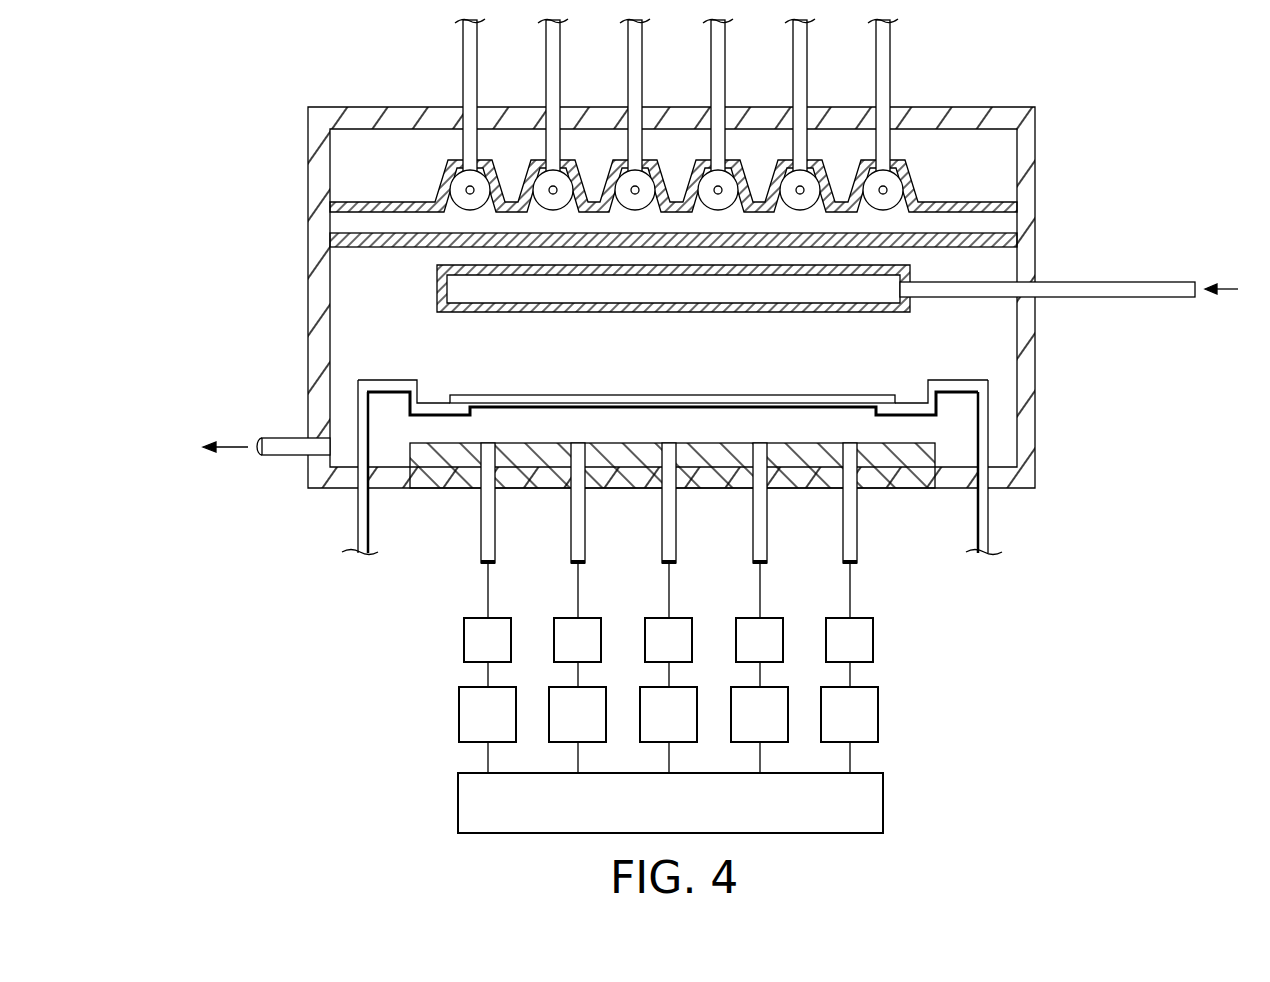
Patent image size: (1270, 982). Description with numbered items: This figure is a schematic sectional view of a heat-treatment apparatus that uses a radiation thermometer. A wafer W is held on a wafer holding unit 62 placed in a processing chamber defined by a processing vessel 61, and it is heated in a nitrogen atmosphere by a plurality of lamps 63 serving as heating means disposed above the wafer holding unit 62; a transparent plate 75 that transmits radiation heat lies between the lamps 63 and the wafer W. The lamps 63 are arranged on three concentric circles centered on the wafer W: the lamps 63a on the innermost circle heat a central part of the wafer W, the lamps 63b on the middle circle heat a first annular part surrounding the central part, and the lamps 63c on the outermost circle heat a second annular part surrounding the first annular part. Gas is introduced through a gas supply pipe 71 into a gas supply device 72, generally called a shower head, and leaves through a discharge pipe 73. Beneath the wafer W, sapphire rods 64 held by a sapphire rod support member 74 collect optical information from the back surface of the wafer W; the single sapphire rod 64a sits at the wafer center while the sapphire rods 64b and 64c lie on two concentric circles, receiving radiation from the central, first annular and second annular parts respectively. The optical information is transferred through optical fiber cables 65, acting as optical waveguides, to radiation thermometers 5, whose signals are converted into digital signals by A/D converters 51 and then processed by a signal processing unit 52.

The processing vessel 61 is at (372, 107).
The wafer holding unit 62 is at (975, 378).
The lamps 63 is at (913, 190).
The lamps on innermost circle 63a is at (697, 165).
The lamps on middle circle 63b is at (537, 172).
The lamps on outermost circle 63c is at (458, 178).
The sapphire rods 64 is at (636, 534).
The central sapphire rod 64a is at (661, 512).
The sapphire rods on inner concentric circle 64b is at (570, 512).
The sapphire rods on outer concentric circle 64c is at (478, 512).
The optical fiber cables 65 is at (862, 590).
The radiation thermometers 5 is at (875, 640).
The A/D converters 51 is at (882, 712).
The signal processing unit 52 is at (885, 777).
The gas supply pipe 71 is at (1091, 282).
The gas supply device 72 is at (437, 290).
The discharge pipe 73 is at (277, 437).
The sapphire rod support member 74 is at (427, 490).
The transparent plate 75 is at (350, 233).
The wafer W is at (885, 395).